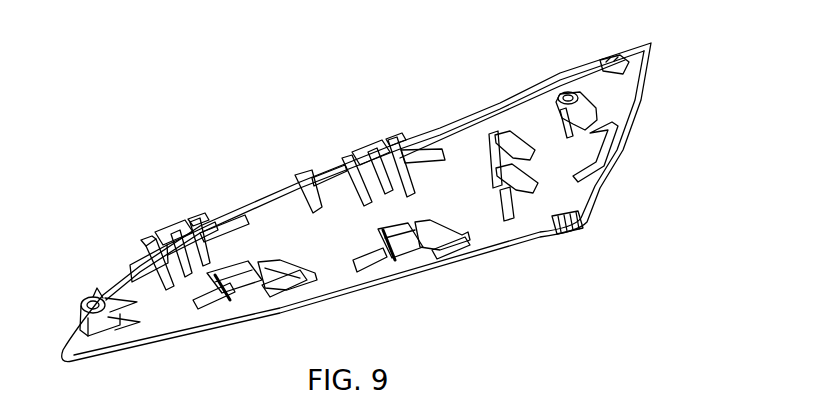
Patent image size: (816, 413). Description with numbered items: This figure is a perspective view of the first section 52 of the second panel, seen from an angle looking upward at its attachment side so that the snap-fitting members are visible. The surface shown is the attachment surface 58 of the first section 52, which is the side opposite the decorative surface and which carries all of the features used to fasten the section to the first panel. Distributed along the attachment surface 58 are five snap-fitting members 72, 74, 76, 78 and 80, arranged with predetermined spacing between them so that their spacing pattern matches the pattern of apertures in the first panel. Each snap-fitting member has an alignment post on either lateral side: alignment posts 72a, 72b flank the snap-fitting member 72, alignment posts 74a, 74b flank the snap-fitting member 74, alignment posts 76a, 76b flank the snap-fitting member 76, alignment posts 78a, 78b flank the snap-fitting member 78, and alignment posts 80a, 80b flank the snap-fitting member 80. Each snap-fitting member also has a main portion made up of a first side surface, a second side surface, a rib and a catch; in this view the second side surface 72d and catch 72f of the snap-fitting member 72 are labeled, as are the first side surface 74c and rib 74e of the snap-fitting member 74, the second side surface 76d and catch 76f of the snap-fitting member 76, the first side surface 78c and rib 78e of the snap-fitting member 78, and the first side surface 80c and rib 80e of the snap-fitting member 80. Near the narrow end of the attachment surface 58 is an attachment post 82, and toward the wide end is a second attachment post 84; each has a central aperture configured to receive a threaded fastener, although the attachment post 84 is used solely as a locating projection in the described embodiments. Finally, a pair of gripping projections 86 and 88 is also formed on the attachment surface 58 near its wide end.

The first section 52 is at (449, 70).
The attachment surface 58 is at (323, 287).
The snap-fitting member 72 is at (237, 270).
The alignment post 72a is at (187, 293).
The alignment post 72b is at (272, 266).
The second side surface 72d is at (245, 290).
The catch 72f is at (233, 287).
The snap-fitting member 74 is at (165, 232).
The alignment post 74a is at (141, 240).
The alignment post 74b is at (193, 228).
The first side surface 74c is at (163, 238).
The rib 74e is at (147, 258).
The snap-fitting member 76 is at (402, 222).
The alignment post 76a is at (373, 247).
The alignment post 76b is at (440, 230).
The second side surface 76d is at (407, 250).
The catch 76f is at (395, 245).
The snap-fitting member 78 is at (362, 150).
The alignment post 78a is at (342, 165).
The alignment post 78b is at (394, 145).
The first side surface 78c is at (360, 155).
The rib 78e is at (343, 177).
The snap-fitting member 80 is at (487, 168).
The alignment post 80a is at (498, 185).
The alignment post 80b is at (498, 131).
The first side surface 80c is at (505, 148).
The rib 80e is at (505, 182).
The attachment post 82 is at (83, 317).
The attachment post 84 is at (573, 98).
The gripping projection 86 is at (563, 231).
The gripping projection 88 is at (617, 58).